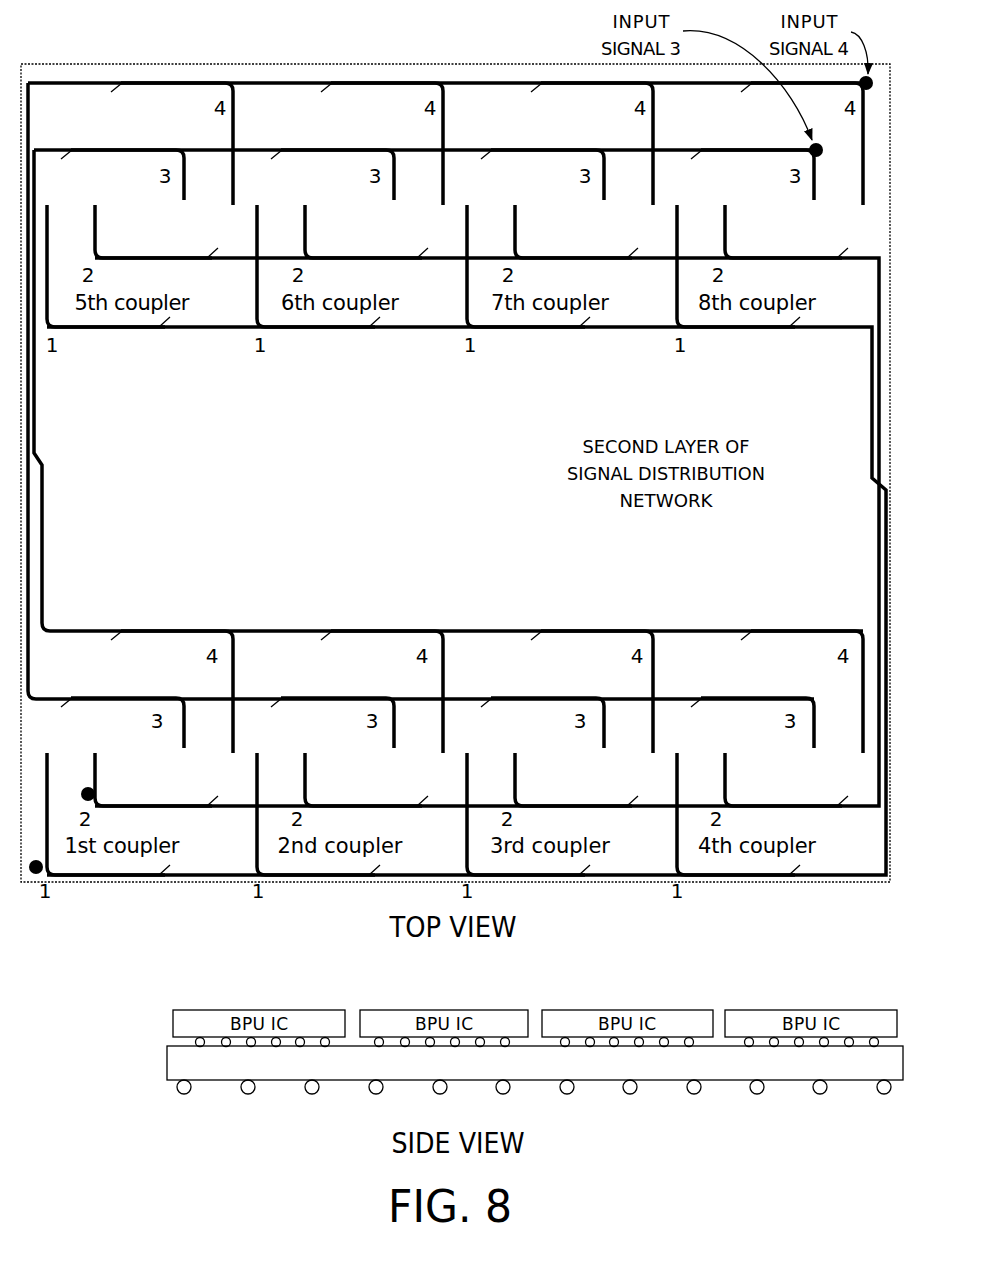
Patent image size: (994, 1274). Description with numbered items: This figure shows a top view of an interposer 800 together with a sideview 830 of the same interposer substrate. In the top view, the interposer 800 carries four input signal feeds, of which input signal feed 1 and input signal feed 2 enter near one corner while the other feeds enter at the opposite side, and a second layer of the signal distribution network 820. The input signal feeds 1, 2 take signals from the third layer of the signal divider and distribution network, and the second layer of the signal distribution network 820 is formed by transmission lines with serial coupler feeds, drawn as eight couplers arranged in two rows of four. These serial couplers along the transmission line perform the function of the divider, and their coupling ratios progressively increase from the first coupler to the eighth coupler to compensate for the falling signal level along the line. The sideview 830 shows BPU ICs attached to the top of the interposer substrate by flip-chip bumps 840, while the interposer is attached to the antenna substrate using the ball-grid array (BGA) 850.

The interposer 800 is at (87, 63).
The second layer of the signal distribution network 820 is at (866, 466).
The sideview of the interposer substrate 830 is at (572, 1101).
The flip-chip bumps 840 is at (58, 1050).
The ball-grid array (BGA) 850 is at (162, 1083).
The input signal feed 1 is at (31, 880).
The input signal feed 2 is at (93, 801).